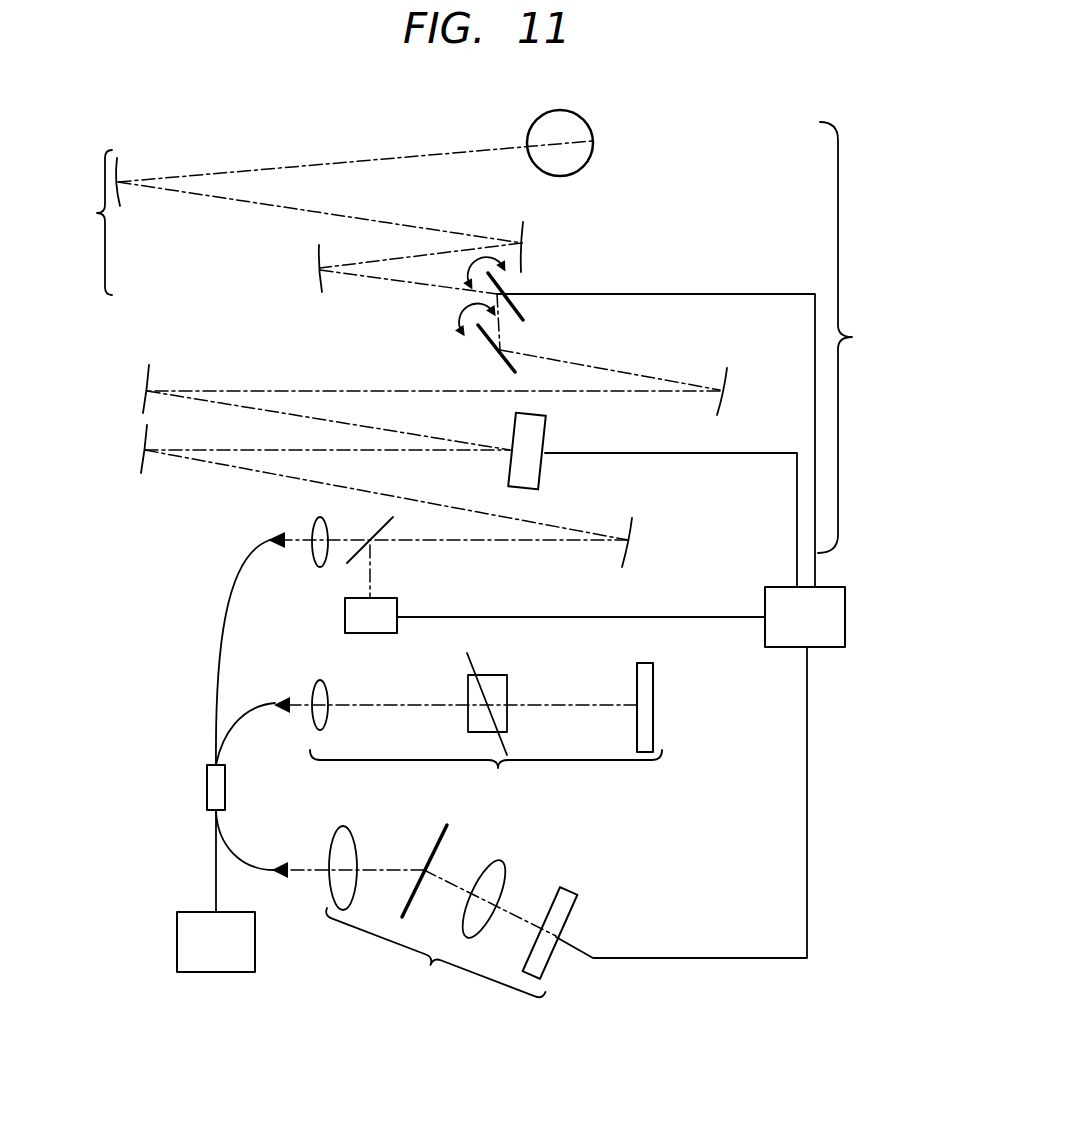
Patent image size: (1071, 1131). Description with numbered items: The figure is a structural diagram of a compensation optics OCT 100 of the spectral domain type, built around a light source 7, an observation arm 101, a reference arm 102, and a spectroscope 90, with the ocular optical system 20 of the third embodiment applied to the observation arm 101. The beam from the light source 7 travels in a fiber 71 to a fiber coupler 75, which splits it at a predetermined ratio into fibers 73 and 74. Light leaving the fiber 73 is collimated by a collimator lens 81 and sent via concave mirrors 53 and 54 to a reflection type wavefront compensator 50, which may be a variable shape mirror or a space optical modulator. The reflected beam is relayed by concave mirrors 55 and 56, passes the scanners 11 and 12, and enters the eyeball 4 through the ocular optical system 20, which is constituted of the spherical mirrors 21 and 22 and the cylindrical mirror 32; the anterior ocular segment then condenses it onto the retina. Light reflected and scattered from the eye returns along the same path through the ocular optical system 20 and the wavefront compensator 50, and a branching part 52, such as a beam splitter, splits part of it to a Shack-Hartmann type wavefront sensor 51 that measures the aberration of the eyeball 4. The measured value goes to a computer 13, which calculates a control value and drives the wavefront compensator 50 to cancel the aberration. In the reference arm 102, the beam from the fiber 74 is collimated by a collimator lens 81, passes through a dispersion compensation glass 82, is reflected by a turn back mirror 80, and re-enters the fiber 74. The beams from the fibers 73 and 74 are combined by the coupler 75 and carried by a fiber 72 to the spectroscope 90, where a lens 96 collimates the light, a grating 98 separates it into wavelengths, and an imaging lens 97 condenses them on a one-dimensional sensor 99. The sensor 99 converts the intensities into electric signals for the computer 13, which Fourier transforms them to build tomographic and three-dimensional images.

The OCT 100 is at (701, 118).
The observation arm 101 is at (860, 337).
The eyeball 4 is at (527, 137).
The ocular optical system 20 is at (90, 222).
The spherical mirror 22 is at (118, 170).
The cylindrical mirror 32 is at (525, 237).
The spherical mirror 21 is at (318, 280).
The scanner 12 is at (522, 313).
The scanner 11 is at (500, 365).
The concave mirror 56 is at (725, 377).
The concave mirror 55 is at (147, 390).
The concave mirror 54 is at (145, 448).
The wavefront compensator 50 is at (545, 423).
The concave mirror 53 is at (632, 533).
The branching part 52 is at (393, 515).
The wavefront sensor 51 is at (370, 633).
The computer 13 is at (765, 632).
The collimator lens 81 is at (320, 567).
The dispersion compensation glass 82 is at (473, 673).
The turn back mirror 80 is at (653, 705).
The reference arm 102 is at (486, 774).
The fiber 73 is at (233, 598).
The fiber 74 is at (237, 720).
The fiber coupler 75 is at (225, 787).
The fiber 72 is at (238, 852).
The fiber 71 is at (215, 860).
The light source 7 is at (255, 940).
The lens 96 is at (345, 826).
The grating 98 is at (443, 832).
The imaging lens 97 is at (500, 860).
The one-dimensional sensor 99 is at (570, 895).
The spectroscope 90 is at (433, 957).